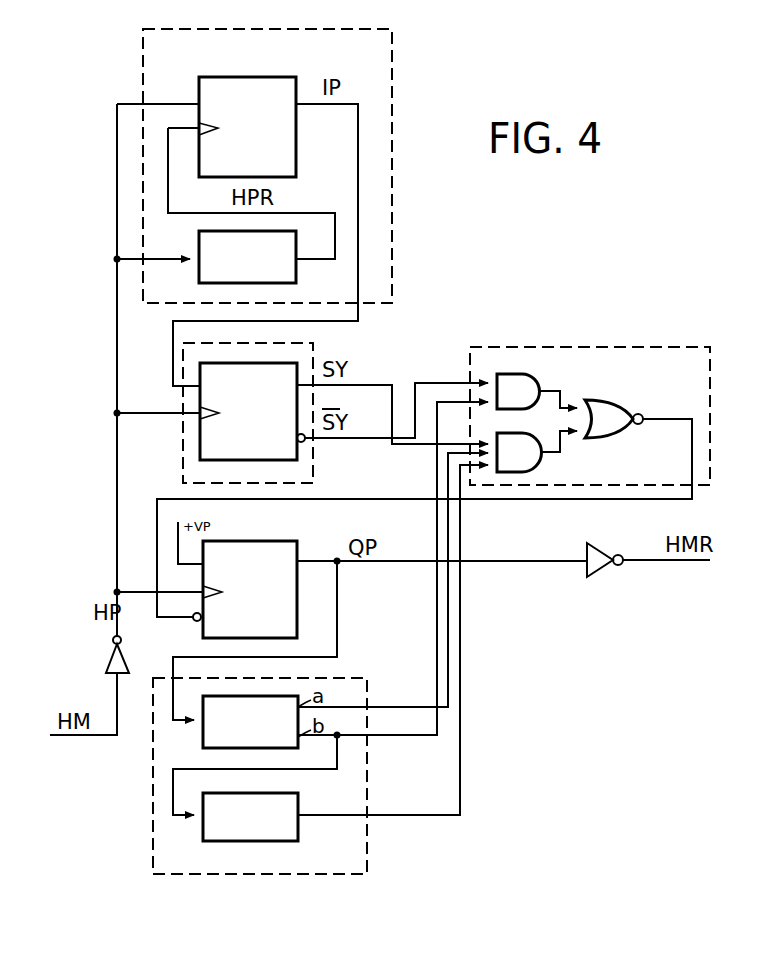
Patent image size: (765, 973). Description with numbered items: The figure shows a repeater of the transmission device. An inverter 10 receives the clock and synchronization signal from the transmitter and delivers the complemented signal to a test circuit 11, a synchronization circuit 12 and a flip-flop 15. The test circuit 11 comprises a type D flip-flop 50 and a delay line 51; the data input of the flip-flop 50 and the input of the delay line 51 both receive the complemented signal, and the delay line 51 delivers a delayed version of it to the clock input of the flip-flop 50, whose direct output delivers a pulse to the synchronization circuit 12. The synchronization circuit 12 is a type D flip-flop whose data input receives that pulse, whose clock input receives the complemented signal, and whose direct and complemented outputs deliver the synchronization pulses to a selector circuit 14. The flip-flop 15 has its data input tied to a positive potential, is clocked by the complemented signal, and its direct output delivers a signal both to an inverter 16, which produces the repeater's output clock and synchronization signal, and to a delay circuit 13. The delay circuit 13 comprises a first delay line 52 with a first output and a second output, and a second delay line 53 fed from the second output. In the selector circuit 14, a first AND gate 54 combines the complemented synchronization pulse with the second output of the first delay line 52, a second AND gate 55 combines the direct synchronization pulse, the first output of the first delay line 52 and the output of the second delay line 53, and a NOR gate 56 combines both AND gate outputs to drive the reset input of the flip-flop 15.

The inverter 10 is at (111, 660).
The test circuit 11 is at (391, 52).
The synchronization circuit 12 is at (300, 460).
The delay circuit 13 is at (355, 781).
The selector circuit 14 is at (617, 347).
The flip-flop 15 is at (258, 541).
The inverter 16 is at (596, 566).
The type D flip-flop 50 is at (262, 77).
The delay line 51 is at (290, 275).
The first delay line 52 is at (210, 741).
The second delay line 53 is at (298, 836).
The first AND gate 54 is at (525, 379).
The second AND gate 55 is at (530, 461).
The NOR gate 56 is at (605, 400).